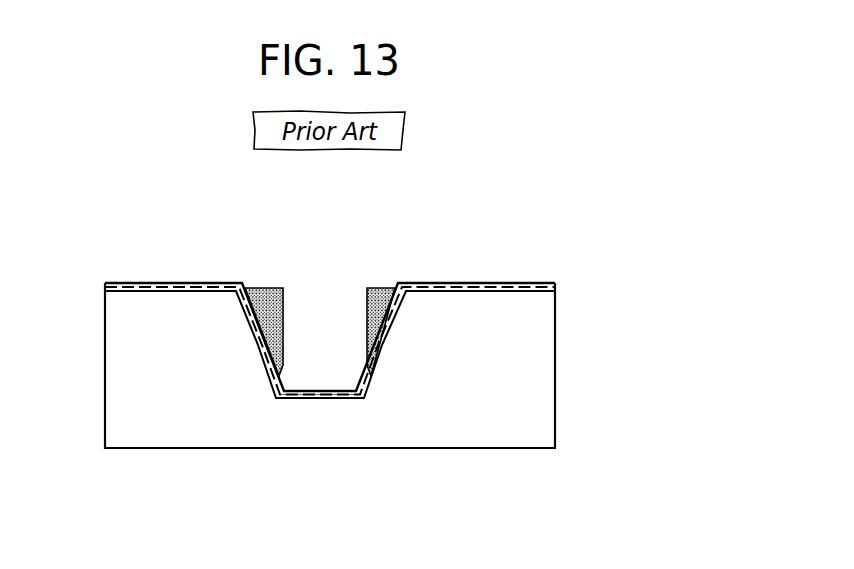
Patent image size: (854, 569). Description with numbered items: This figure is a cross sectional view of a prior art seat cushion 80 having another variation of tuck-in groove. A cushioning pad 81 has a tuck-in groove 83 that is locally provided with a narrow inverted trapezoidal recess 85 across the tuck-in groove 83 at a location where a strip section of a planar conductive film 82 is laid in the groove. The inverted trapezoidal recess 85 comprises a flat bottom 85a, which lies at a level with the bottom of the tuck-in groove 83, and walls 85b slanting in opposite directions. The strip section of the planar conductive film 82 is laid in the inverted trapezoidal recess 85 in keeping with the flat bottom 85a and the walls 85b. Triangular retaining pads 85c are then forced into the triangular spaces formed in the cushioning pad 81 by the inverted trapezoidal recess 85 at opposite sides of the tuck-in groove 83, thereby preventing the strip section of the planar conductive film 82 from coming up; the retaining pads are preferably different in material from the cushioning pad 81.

The seat cushion 80 is at (440, 253).
The cushioning pad 81 is at (118, 333).
The planar conductive film 82 is at (164, 282).
The tuck-in groove 83 is at (341, 359).
The inverted trapezoidal recess 85 is at (421, 478).
The flat bottom 85a is at (348, 400).
The walls 85b is at (279, 396).
The triangular retaining pads 85c is at (373, 304).